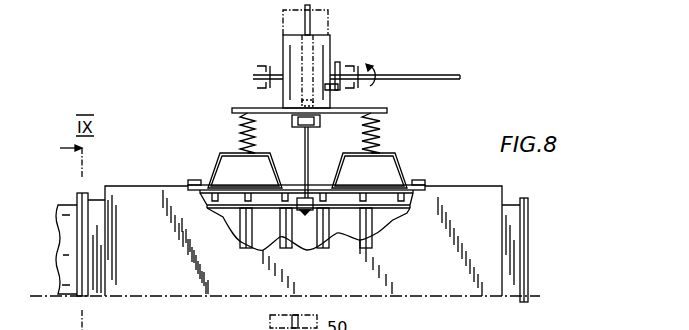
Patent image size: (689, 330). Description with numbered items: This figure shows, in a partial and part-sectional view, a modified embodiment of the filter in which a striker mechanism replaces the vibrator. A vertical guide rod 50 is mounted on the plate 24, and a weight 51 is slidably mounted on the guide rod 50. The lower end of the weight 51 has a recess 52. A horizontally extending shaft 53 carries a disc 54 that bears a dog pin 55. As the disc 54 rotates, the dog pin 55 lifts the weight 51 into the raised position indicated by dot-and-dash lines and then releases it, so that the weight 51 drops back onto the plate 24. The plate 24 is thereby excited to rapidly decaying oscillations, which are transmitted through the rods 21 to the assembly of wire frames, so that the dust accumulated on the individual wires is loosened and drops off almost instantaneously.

The rods 21 is at (304, 147).
The plate 24 is at (385, 113).
The vertical guide rod 50 is at (311, 22).
The weight 51 is at (293, 43).
The recess 52 is at (323, 100).
The shaft 53 is at (378, 77).
The disc 54 is at (339, 63).
The dog pin 55 is at (327, 96).